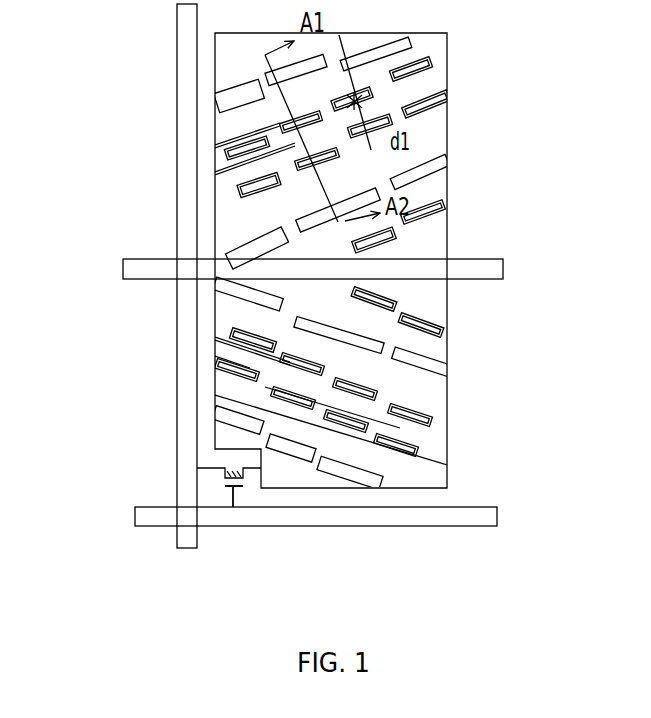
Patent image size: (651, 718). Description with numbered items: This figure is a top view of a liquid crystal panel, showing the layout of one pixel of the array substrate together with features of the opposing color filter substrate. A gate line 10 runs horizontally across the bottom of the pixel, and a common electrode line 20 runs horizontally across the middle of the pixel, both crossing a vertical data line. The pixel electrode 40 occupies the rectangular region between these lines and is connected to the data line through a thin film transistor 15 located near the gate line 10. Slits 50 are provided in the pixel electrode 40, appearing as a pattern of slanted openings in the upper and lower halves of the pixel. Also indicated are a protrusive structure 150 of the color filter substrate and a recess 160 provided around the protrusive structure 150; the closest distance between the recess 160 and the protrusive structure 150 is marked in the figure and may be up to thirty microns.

The gate line 10 is at (135, 507).
The thin film transistor 15 is at (242, 488).
The common electrode line 20 is at (125, 257).
The pixel electrode 40 is at (447, 122).
The slits 50 is at (428, 360).
The protrusive structure 150 is at (427, 438).
The recess 160 is at (395, 403).